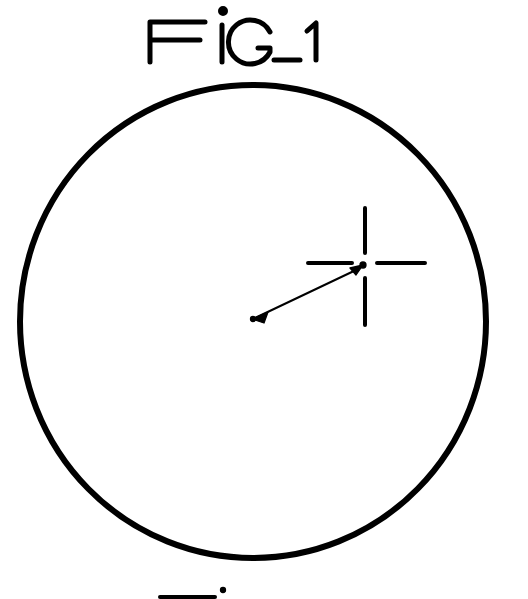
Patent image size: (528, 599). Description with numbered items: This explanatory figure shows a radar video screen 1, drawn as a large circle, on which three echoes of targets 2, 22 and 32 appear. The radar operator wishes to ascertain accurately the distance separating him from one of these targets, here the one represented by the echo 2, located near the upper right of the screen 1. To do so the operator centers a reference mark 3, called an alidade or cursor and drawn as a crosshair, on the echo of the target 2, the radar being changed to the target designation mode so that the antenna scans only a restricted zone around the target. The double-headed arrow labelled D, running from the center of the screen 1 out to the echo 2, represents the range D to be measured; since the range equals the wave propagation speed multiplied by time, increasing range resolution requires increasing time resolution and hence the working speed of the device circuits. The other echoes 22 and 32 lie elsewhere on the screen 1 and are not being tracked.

The video screen 1 is at (485, 283).
The target echo 2 is at (365, 263).
The reference mark 3 is at (367, 300).
The range D is at (294, 300).
The target echo 22 is at (110, 231).
The target echo 32 is at (196, 523).